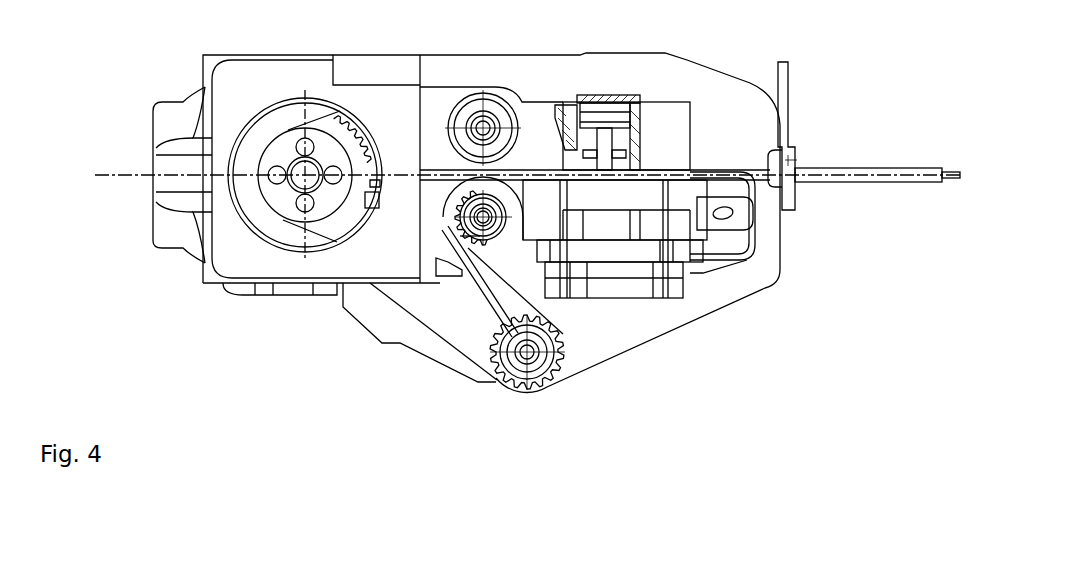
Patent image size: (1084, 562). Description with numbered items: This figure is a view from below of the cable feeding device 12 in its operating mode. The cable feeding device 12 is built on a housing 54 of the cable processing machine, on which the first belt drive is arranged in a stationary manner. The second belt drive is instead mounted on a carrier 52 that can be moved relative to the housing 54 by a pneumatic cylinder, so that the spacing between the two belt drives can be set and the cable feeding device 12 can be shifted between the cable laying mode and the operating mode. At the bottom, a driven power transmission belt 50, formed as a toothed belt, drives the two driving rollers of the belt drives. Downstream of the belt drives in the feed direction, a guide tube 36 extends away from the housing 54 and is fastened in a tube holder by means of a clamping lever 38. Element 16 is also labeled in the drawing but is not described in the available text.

The cable feeding device 12 is at (328, 388).
The actuating rod end 16 is at (948, 183).
The guide tube 36 is at (870, 174).
The clamping lever 38 is at (783, 91).
The power transmission belt 50 is at (540, 393).
The carrier 52 is at (652, 192).
The housing 54 is at (630, 327).